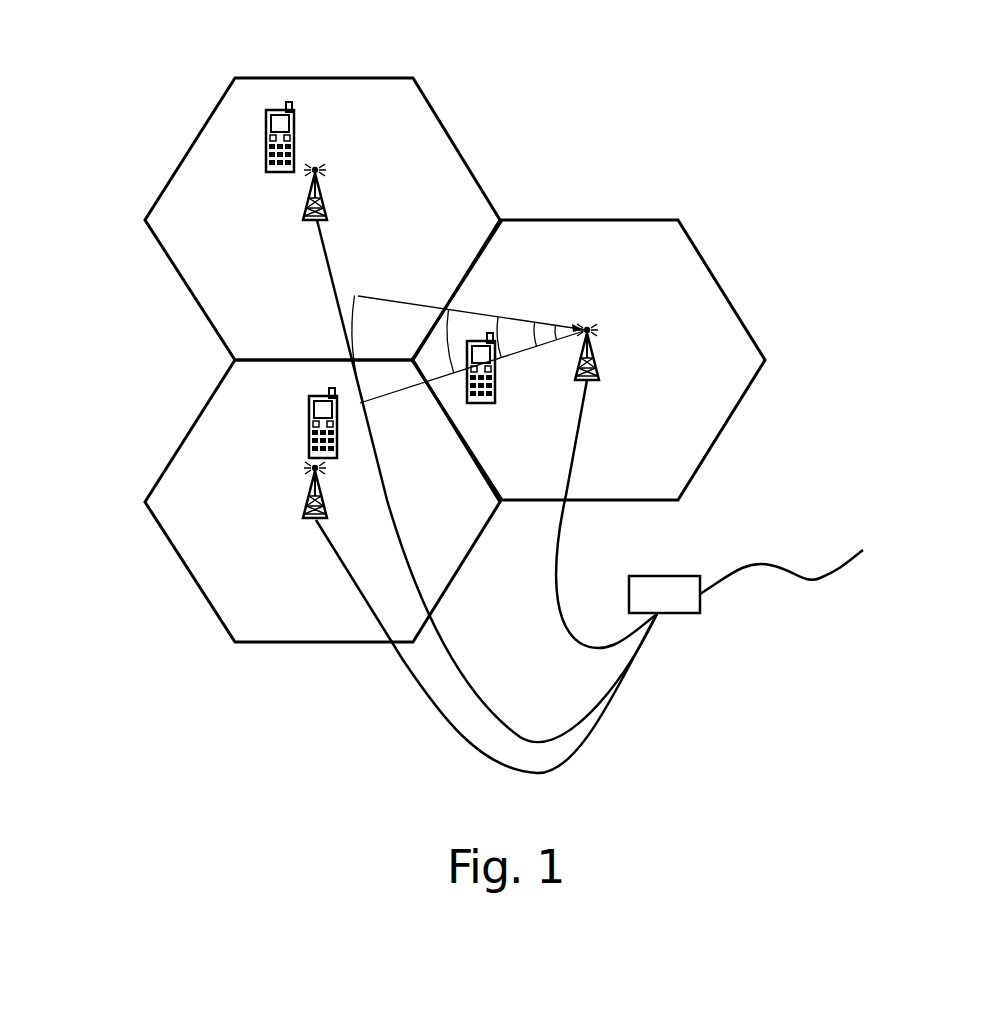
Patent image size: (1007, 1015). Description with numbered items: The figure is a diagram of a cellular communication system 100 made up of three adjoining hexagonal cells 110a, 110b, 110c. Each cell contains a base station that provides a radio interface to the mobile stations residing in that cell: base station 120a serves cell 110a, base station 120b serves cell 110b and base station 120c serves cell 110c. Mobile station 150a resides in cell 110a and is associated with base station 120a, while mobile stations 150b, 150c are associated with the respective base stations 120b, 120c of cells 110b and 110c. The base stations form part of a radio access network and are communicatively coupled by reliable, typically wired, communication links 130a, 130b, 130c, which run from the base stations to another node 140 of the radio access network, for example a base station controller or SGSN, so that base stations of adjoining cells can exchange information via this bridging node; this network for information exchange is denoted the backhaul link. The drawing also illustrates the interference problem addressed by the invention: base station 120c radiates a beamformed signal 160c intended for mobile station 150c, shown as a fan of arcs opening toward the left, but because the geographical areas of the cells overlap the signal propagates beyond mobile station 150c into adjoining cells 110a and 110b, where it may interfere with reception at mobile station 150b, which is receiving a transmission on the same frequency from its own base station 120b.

The cellular communication system 100 is at (168, 108).
The cell 110a is at (177, 273).
The cell 110b is at (183, 437).
The cell 110c is at (718, 281).
The base station 120a is at (305, 193).
The base station 120b is at (303, 498).
The base station 120c is at (600, 353).
The communication link 130a is at (323, 272).
The communication link 130b is at (442, 713).
The communication link 130c is at (565, 528).
The node 140 is at (688, 609).
The mobile station 150a is at (277, 108).
The mobile station 150b is at (308, 427).
The mobile station 150c is at (497, 380).
The signal 160c is at (542, 322).